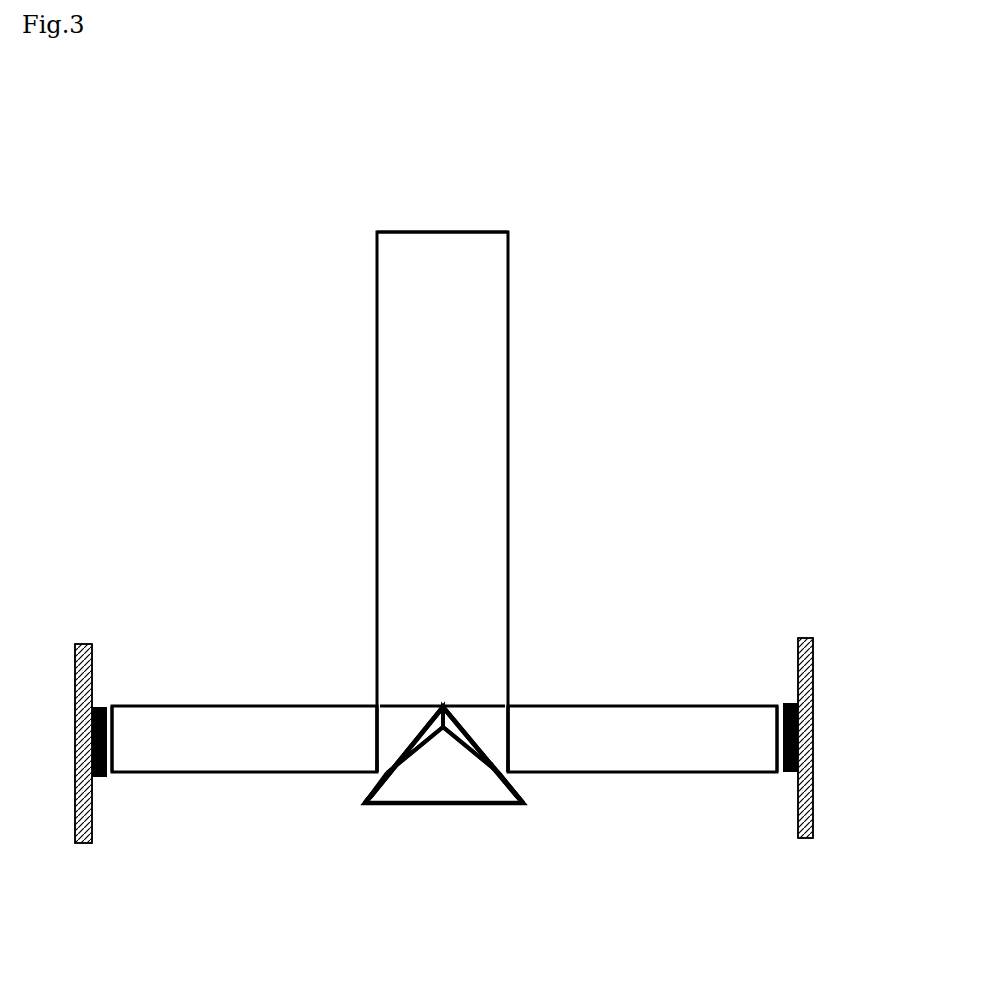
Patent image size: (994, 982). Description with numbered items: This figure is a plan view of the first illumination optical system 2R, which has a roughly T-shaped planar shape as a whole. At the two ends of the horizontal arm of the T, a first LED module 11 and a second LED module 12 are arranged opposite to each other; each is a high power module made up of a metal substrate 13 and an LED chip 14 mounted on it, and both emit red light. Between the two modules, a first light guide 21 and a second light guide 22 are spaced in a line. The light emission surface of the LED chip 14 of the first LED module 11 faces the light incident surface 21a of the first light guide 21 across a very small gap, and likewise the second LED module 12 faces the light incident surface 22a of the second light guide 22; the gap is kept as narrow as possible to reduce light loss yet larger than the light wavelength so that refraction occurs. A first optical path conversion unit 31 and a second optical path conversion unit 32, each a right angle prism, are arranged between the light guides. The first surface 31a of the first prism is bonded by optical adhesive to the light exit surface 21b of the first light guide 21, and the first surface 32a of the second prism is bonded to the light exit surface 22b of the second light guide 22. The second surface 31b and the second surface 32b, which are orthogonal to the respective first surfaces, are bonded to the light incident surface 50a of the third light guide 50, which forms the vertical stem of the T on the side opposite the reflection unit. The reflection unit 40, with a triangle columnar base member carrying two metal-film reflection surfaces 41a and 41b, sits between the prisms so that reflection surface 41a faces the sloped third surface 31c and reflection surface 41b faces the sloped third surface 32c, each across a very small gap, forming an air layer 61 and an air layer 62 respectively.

The first illumination optical system 2R is at (578, 223).
The third light guide 50 is at (493, 352).
The light incident surface of third light guide 50a is at (427, 702).
The second light guide 22 is at (180, 725).
The first light guide 21 is at (690, 722).
The light incident surface of second light guide 22a is at (106, 708).
The light incident surface of first light guide 21a is at (777, 705).
The light exit surface of second light guide 22b is at (378, 727).
The light exit surface of first light guide 21b is at (508, 726).
The second LED module 12 is at (88, 615).
The first LED module 11 is at (808, 610).
The metal substrate 13 is at (85, 843).
The LED chip 14 is at (107, 778).
The reflection unit 40 is at (449, 790).
The second optical path conversion unit 32 is at (413, 725).
The first optical path conversion unit 31 is at (467, 710).
The first surface of second optical path conversion unit 32a is at (374, 743).
The second surface of second optical path conversion unit 32b is at (388, 705).
The third surface of second optical path conversion unit 32c is at (397, 782).
The first surface of first optical path conversion unit 31a is at (512, 745).
The second surface of first optical path conversion unit 31b is at (478, 712).
The third surface of first optical path conversion unit 31c is at (489, 782).
The reflection surface 41a is at (515, 787).
The reflection surface 41b is at (365, 797).
The air layer 61 is at (508, 773).
The air layer 62 is at (378, 775).